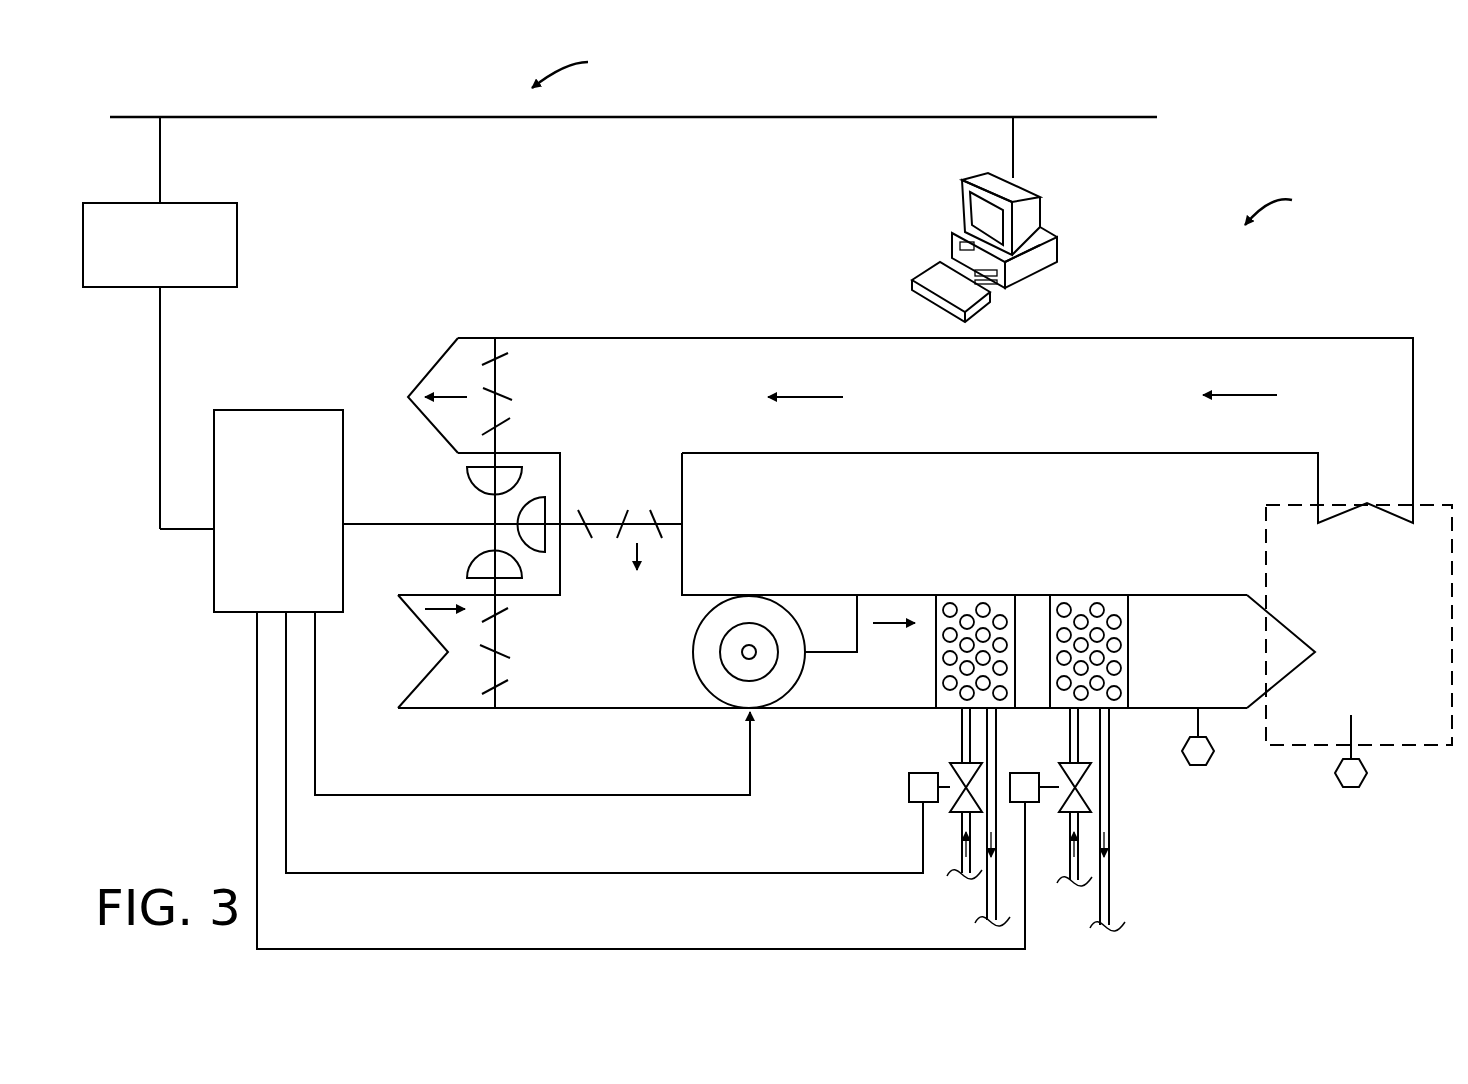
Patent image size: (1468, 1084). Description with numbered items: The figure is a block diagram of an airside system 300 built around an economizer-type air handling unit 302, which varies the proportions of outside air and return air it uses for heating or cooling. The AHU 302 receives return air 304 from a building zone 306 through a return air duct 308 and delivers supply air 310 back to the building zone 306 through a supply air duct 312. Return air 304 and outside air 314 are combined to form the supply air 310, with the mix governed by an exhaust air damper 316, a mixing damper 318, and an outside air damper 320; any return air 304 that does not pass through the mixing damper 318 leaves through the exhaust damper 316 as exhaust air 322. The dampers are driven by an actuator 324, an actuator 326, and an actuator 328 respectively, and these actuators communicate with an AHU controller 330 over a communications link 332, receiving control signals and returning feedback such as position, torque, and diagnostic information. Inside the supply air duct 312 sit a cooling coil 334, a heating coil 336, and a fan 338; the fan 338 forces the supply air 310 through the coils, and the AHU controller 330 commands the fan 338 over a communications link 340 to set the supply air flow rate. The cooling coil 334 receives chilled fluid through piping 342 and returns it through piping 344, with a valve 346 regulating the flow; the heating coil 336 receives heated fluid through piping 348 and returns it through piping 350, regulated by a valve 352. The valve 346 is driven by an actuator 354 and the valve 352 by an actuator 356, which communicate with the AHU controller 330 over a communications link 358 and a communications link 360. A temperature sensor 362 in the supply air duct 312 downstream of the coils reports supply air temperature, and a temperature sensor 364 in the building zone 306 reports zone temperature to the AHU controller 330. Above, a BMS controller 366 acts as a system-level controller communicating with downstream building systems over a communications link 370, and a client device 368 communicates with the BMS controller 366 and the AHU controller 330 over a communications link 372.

The airside system 300 is at (582, 69).
The air handling unit 302 is at (1289, 205).
The return air 304 is at (1375, 418).
The building zone 306 is at (1425, 727).
The return air duct 308 is at (1268, 338).
The supply air 310 is at (1221, 613).
The supply air duct 312 is at (1167, 595).
The outside air 314 is at (384, 690).
The exhaust air damper 316 is at (497, 378).
The mixing damper 318 is at (667, 522).
The outside air damper 320 is at (497, 668).
The exhaust air 322 is at (385, 348).
The actuator 324 is at (515, 473).
The actuator 326 is at (545, 497).
The actuator 328 is at (467, 577).
The AHU controller 330 is at (249, 418).
The communications link 332 is at (398, 523).
The cooling coil 334 is at (968, 600).
The heating coil 336 is at (1082, 600).
The fan 338 is at (798, 670).
The communications link 340 is at (553, 795).
The piping 342 is at (960, 736).
The piping 344 is at (987, 904).
The valve 346 is at (958, 768).
The piping 348 is at (1068, 736).
The piping 350 is at (1110, 885).
The valve 352 is at (1066, 768).
The actuator 354 is at (911, 798).
The actuator 356 is at (1028, 797).
The communications link 358 is at (654, 873).
The communications link 360 is at (707, 949).
The temperature sensor 362 is at (1198, 765).
The temperature sensor 364 is at (1351, 787).
The BMS controller 366 is at (237, 245).
The client device 368 is at (1033, 212).
The communications link 370 is at (163, 458).
The communications link 372 is at (275, 117).